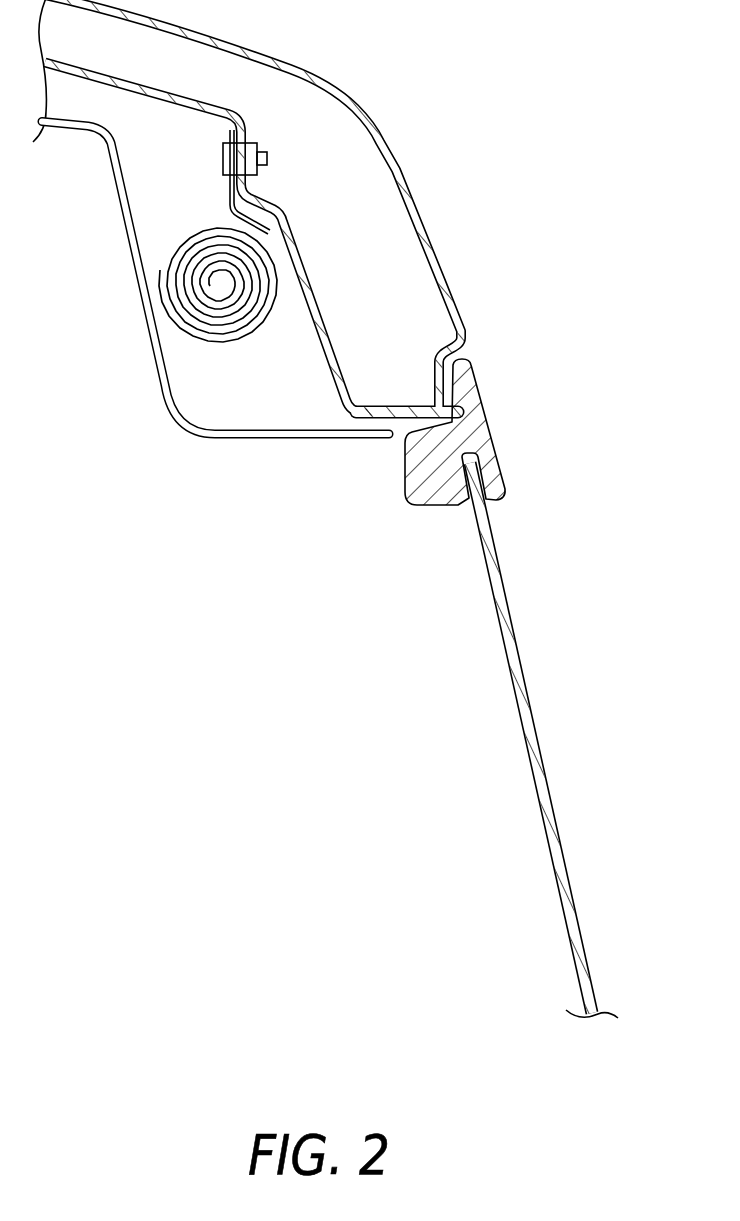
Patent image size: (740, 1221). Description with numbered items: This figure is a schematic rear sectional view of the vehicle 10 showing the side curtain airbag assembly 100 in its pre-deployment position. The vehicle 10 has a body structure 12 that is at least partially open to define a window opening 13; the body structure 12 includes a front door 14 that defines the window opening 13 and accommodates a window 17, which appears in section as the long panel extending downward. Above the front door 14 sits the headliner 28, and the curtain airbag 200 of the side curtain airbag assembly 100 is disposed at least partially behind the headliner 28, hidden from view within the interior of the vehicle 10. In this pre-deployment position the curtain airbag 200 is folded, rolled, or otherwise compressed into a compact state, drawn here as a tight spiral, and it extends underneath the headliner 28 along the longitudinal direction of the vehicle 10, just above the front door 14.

The vehicle 10 is at (457, 138).
The side curtain airbag assembly 100 is at (178, 250).
The curtain airbag 200 is at (162, 336).
The headliner 28 is at (167, 402).
The body structure 12 is at (486, 432).
The front door 14 is at (488, 422).
The window 17 is at (540, 741).
The window opening 13 is at (544, 740).